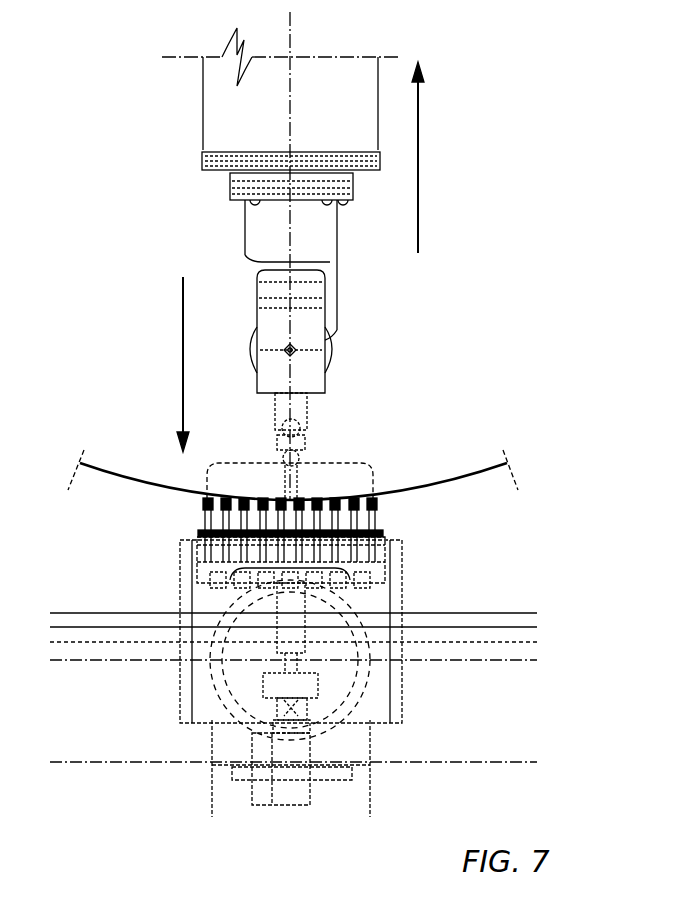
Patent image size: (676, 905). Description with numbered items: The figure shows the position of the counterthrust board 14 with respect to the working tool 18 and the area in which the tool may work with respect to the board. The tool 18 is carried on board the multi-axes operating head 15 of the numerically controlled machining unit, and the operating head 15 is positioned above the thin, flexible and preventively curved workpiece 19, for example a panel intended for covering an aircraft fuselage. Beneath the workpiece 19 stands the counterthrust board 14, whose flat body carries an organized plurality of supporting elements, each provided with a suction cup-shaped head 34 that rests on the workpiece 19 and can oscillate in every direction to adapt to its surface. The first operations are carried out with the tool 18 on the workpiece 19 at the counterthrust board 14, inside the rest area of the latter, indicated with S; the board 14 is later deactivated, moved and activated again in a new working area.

The multi-axes operating head 15 is at (337, 210).
The tool 18 is at (295, 488).
The rest area S is at (363, 463).
The workpiece 19 is at (116, 477).
The head 34 is at (203, 498).
The counterthrust board 14 is at (385, 532).